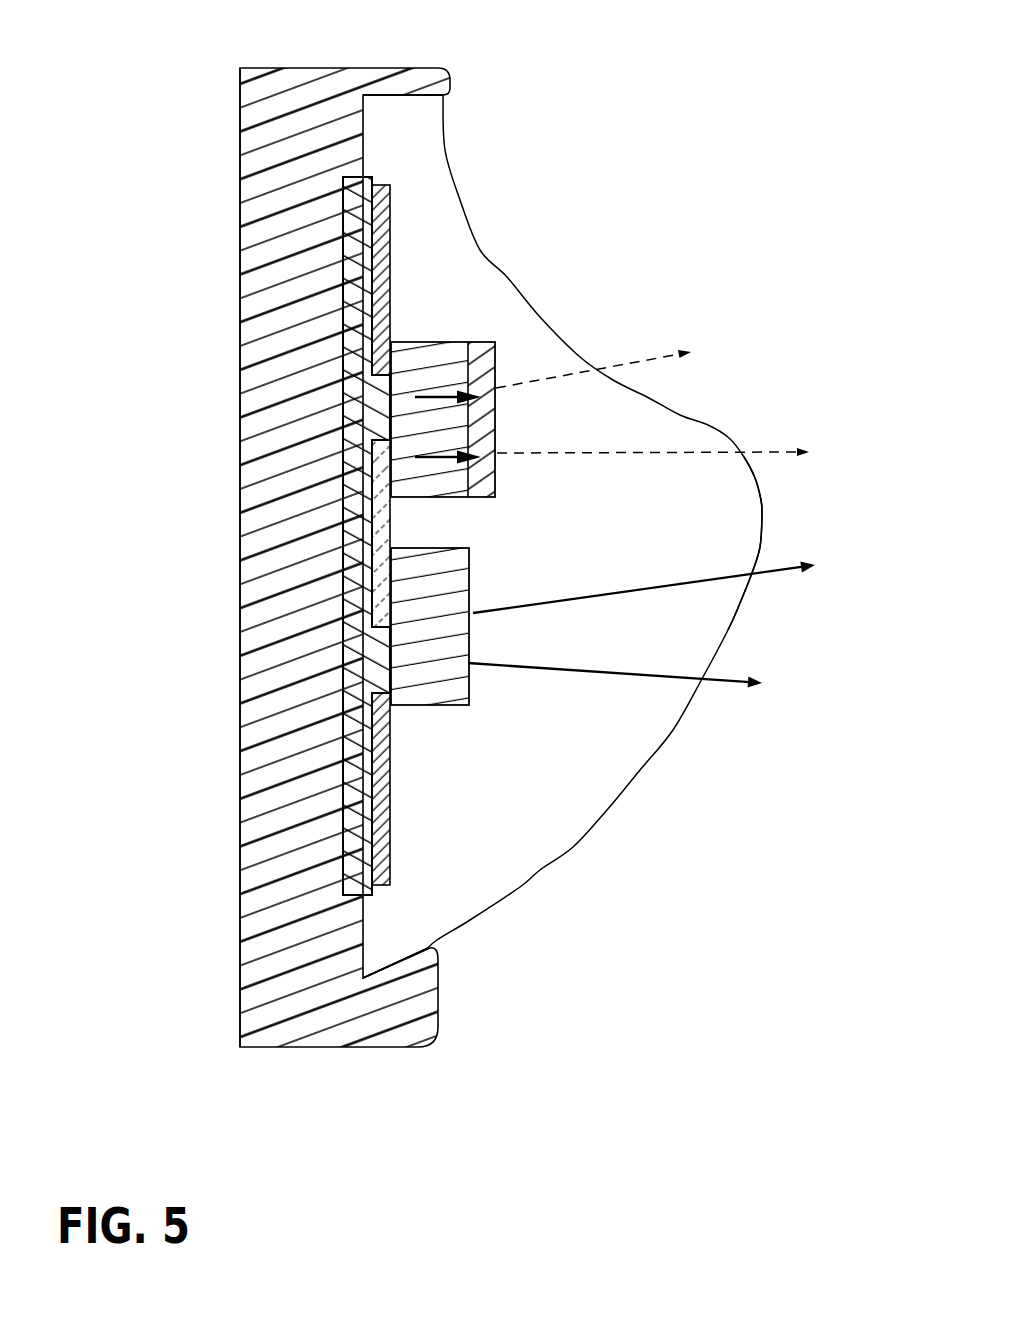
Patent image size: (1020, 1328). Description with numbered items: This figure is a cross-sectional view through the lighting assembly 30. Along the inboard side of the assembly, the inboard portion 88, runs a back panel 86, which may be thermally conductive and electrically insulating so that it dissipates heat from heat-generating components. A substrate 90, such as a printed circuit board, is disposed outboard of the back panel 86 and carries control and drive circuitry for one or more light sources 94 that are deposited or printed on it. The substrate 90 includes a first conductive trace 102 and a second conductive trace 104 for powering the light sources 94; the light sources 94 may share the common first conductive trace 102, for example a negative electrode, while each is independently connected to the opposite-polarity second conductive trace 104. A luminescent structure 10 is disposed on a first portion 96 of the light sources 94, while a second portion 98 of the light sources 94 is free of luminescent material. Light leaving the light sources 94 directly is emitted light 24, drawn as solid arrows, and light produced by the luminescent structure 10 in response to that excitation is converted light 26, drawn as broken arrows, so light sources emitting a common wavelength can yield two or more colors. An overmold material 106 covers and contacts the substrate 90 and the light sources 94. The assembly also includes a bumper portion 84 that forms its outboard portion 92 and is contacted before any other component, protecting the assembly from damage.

The luminescent structure 10 is at (501, 360).
The emitted light 24 is at (425, 463).
The converted light 26 is at (654, 358).
The lighting assembly 30 is at (300, 67).
The bumper portion 84 is at (766, 510).
The back panel 86 is at (262, 425).
The inboard portion 88 is at (238, 395).
The substrate 90 is at (360, 652).
The outboard portion 92 is at (744, 608).
The light source 94 is at (453, 355).
The first portion 96 is at (474, 427).
The second portion 98 is at (450, 673).
The first conductive trace 102 is at (375, 550).
The second conductive trace 104 is at (377, 280).
The overmold material 106 is at (512, 843).